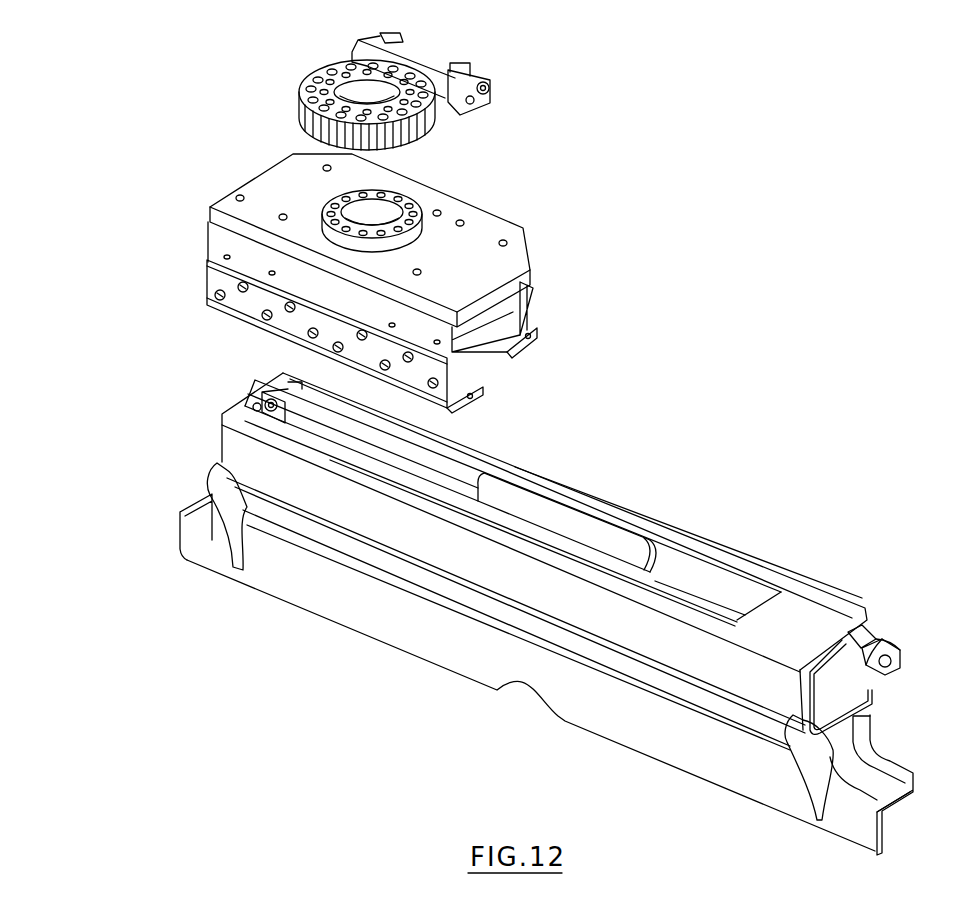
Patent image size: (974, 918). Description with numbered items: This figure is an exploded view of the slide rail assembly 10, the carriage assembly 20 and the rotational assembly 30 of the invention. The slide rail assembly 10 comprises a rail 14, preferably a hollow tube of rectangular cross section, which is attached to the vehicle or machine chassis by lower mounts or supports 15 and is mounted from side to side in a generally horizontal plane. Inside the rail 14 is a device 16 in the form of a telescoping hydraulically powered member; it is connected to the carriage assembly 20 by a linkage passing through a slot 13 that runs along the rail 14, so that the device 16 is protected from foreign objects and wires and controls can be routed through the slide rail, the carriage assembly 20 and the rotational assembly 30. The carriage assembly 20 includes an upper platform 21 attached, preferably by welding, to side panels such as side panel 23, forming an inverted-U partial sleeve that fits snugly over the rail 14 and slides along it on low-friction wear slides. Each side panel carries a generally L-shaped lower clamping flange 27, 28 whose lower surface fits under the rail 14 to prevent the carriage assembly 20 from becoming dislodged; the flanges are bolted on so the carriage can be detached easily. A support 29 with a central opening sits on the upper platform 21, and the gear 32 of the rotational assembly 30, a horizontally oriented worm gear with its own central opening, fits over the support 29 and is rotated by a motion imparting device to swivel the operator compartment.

The slide rail assembly 10 is at (610, 465).
The slot 13 is at (277, 422).
The rail 14 is at (345, 512).
The lower mounts or supports 15 is at (857, 730).
The device 16 is at (697, 577).
The carriage assembly 20 is at (550, 217).
The upper platform 21 is at (455, 212).
The side panel 23 is at (235, 240).
The lower clamping flange 27 is at (520, 337).
The lower clamping flange 28 is at (248, 306).
The support 29 is at (405, 240).
The rotational assembly 30 is at (515, 86).
The gear 32 is at (300, 117).